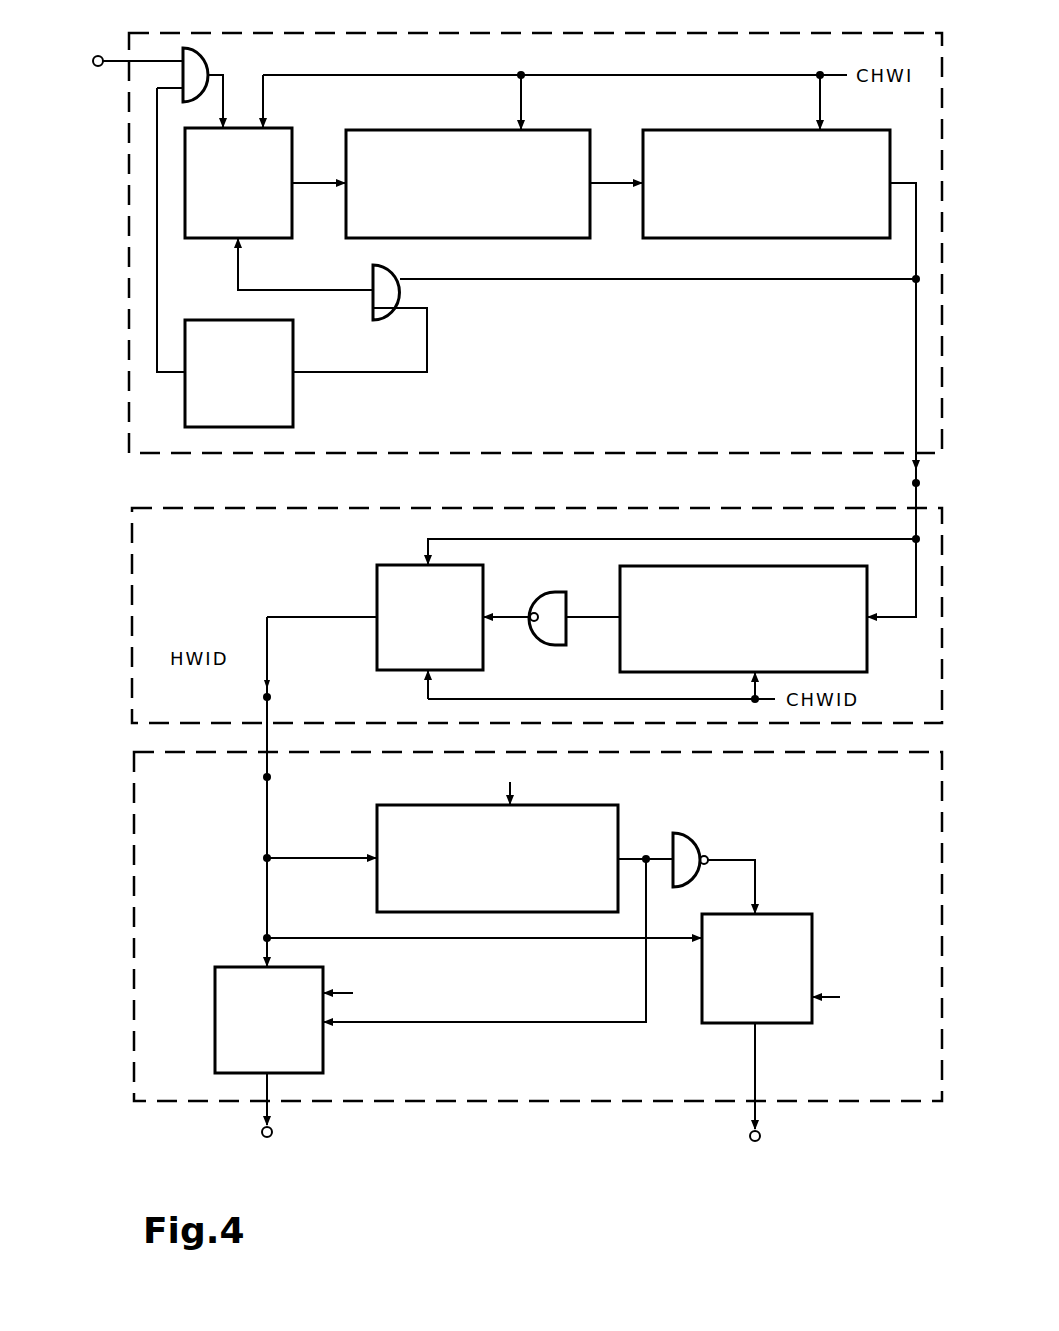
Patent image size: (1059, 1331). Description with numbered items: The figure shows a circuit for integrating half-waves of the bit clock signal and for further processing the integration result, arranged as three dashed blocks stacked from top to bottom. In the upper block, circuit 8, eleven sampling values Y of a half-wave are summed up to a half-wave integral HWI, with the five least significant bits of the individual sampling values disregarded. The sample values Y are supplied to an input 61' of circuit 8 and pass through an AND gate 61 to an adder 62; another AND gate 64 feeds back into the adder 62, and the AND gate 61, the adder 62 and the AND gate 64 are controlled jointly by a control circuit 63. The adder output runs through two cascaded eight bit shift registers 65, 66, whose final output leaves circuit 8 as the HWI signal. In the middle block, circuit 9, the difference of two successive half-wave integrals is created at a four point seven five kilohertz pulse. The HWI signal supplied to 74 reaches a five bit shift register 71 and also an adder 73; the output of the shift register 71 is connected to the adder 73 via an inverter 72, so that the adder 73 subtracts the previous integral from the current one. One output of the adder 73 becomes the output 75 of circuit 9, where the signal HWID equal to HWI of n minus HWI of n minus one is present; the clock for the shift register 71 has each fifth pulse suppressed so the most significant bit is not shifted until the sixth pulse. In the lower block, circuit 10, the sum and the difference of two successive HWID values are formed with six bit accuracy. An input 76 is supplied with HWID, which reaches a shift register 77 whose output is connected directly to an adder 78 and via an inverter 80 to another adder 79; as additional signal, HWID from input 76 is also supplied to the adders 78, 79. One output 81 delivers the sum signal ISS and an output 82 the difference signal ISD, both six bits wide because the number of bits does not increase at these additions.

The circuit 8 is at (135, 166).
The circuit 9 is at (138, 556).
The circuit 10 is at (140, 815).
The input 61' is at (129, 33).
The AND gate 61 is at (212, 87).
The adder 62 is at (292, 128).
The control circuit 63 is at (293, 343).
The AND gate 64 is at (373, 276).
The 8 bit shift register 65 is at (590, 130).
The 8 bit shift register 66 is at (890, 130).
The 5 bit shift register 71 is at (867, 592).
The inverter 72 is at (566, 596).
The adder 73 is at (377, 570).
The input 74 is at (912, 483).
The output 75 is at (271, 697).
The input 76 is at (271, 777).
The shift register 77 is at (618, 805).
The adder 78 is at (225, 967).
The adder 79 is at (812, 914).
The inverter 80 is at (695, 837).
The output 81 is at (273, 1132).
The output 82 is at (761, 1136).